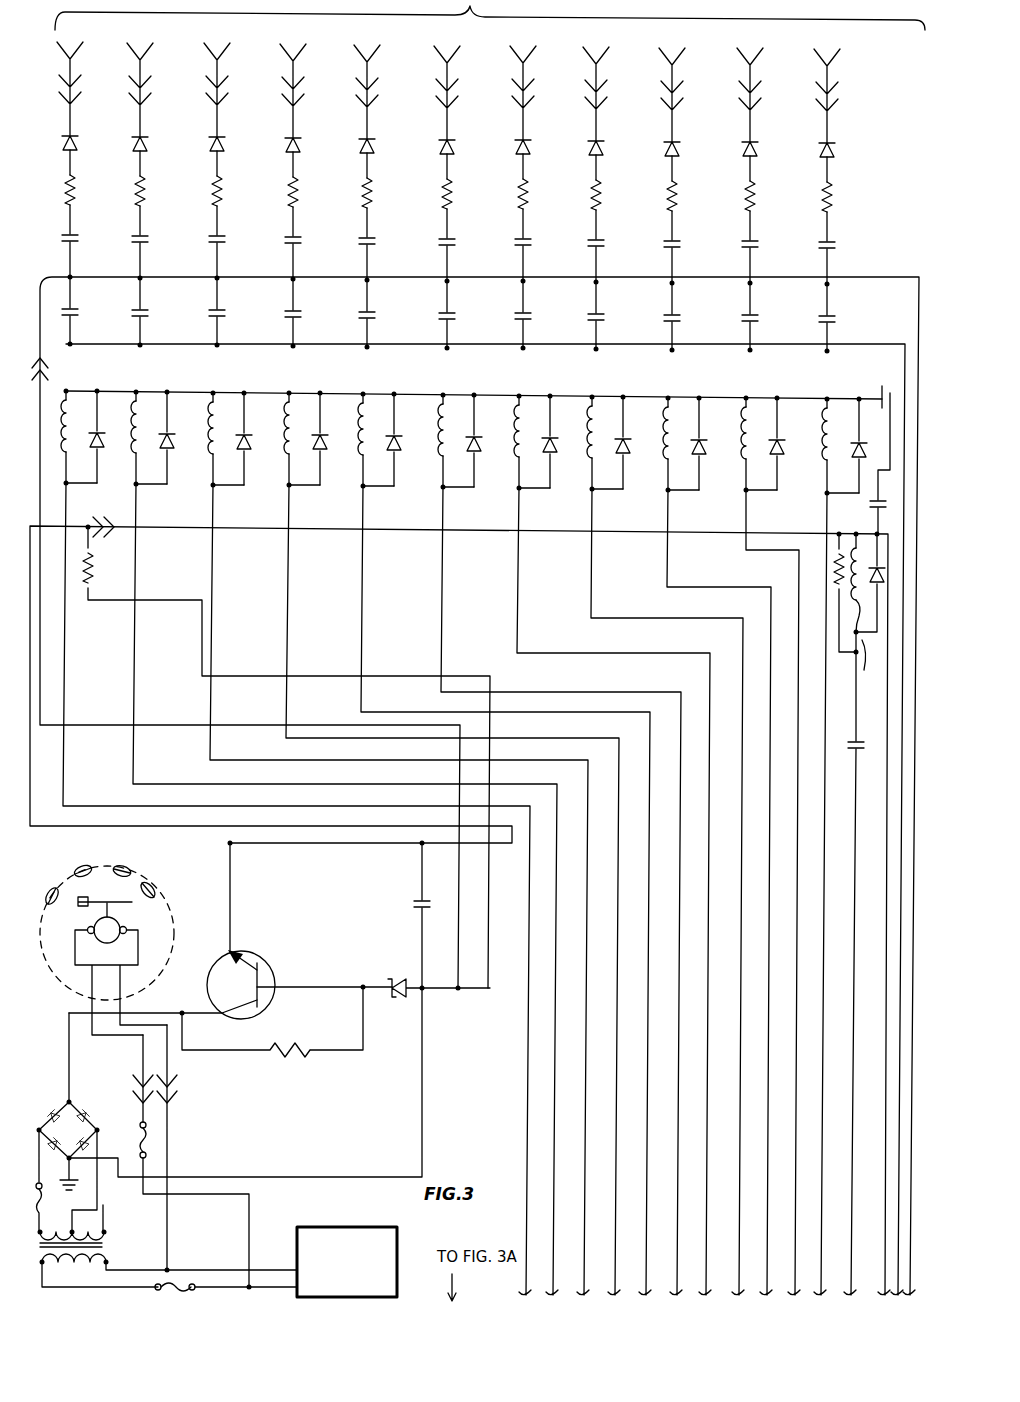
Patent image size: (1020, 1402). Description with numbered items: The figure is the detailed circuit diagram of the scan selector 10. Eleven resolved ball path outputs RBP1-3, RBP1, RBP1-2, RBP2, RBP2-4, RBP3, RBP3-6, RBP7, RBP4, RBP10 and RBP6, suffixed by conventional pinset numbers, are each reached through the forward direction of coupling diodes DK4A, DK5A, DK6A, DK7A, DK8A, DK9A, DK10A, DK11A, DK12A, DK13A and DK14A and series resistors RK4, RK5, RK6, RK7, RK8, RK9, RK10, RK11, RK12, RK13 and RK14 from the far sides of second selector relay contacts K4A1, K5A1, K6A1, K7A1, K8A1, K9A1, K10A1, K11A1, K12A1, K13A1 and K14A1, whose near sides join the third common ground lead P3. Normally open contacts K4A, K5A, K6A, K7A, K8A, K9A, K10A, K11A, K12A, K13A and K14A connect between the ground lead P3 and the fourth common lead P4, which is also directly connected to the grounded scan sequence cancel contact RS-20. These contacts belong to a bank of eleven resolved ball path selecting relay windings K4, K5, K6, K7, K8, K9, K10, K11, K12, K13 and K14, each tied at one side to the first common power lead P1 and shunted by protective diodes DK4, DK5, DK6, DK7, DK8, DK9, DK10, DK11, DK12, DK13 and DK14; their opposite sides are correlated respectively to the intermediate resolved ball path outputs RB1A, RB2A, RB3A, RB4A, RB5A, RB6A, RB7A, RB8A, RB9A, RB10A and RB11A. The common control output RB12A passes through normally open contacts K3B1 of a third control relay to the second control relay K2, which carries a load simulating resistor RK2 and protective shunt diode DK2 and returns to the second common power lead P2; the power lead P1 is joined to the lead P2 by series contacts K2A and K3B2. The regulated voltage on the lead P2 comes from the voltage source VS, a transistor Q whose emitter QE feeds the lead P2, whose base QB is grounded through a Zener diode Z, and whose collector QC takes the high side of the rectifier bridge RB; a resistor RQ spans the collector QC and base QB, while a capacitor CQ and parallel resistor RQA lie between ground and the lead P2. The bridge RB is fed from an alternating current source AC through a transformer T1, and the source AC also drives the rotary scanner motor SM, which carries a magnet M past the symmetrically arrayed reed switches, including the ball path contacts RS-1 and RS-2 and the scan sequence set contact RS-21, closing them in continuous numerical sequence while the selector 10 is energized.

The scan selector 10 is at (52, 166).
The resolved ball path output RBP1-3 is at (70, 76).
The resolved ball path output RBP1 is at (140, 77).
The resolved ball path output RBP1-2 is at (217, 77).
The resolved ball path output RBP2 is at (293, 78).
The resolved ball path output RBP2-4 is at (367, 79).
The resolved ball path output RBP3 is at (447, 80).
The resolved ball path output RBP3-6 is at (523, 80).
The resolved ball path output RBP7 is at (596, 81).
The resolved ball path output RBP4 is at (672, 82).
The resolved ball path output RBP10 is at (749, 82).
The resolved ball path output RBP6 is at (827, 83).
The coupling diode DK4A is at (89, 139).
The coupling diode DK5A is at (159, 140).
The coupling diode DK6A is at (236, 140).
The coupling diode DK7A is at (312, 141).
The coupling diode DK8A is at (386, 142).
The coupling diode DK9A is at (466, 143).
The coupling diode DK10A is at (542, 143).
The coupling diode DK11A is at (615, 144).
The coupling diode DK12A is at (691, 145).
The coupling diode DK13A is at (769, 145).
The coupling diode DK14A is at (846, 146).
The series resistor RK4 is at (89, 204).
The series resistor RK5 is at (159, 205).
The series resistor RK6 is at (236, 205).
The series resistor RK7 is at (312, 206).
The series resistor RK8 is at (386, 207).
The series resistor RK9 is at (466, 208).
The series resistor RK10 is at (547, 208).
The series resistor RK11 is at (620, 209).
The series resistor RK12 is at (696, 210).
The series resistor RK13 is at (774, 210).
The series resistor RK14 is at (851, 211).
The second selector relay contacts K4A1 is at (89, 232).
The second selector relay contacts K5A1 is at (159, 233).
The second selector relay contacts K6A1 is at (236, 233).
The second selector relay contacts K7A1 is at (312, 234).
The second selector relay contacts K8A1 is at (386, 235).
The second selector relay contacts K9A1 is at (466, 236).
The second selector relay contacts K10A1 is at (542, 236).
The second selector relay contacts K11A1 is at (615, 237).
The second selector relay contacts K12A1 is at (691, 238).
The second selector relay contacts K13A1 is at (769, 238).
The second selector relay contacts K14A1 is at (846, 239).
The selecting relay contacts K4A is at (89, 306).
The selecting relay contacts K5A is at (159, 307).
The selecting relay contacts K6A is at (236, 307).
The selecting relay contacts K7A is at (312, 308).
The selecting relay contacts K8A is at (386, 309).
The selecting relay contacts K9A is at (466, 310).
The selecting relay contacts K10A is at (542, 310).
The selecting relay contacts K11A is at (615, 311).
The selecting relay contacts K12A is at (691, 312).
The selecting relay contacts K13A is at (769, 312).
The selecting relay contacts K14A is at (846, 313).
The resolved ball path selecting relay winding K4 is at (79, 437).
The resolved ball path selecting relay winding K5 is at (149, 438).
The resolved ball path selecting relay winding K6 is at (226, 439).
The resolved ball path selecting relay winding K7 is at (302, 439).
The resolved ball path selecting relay winding K8 is at (376, 440).
The resolved ball path selecting relay winding K9 is at (456, 441).
The resolved ball path selecting relay winding K10 is at (532, 442).
The resolved ball path selecting relay winding K11 is at (605, 443).
The resolved ball path selecting relay winding K12 is at (681, 444).
The resolved ball path selecting relay winding K13 is at (759, 444).
The resolved ball path selecting relay winding K14 is at (840, 446).
The protective diode DK4 is at (112, 436).
The protective diode DK5 is at (182, 437).
The protective diode DK6 is at (259, 438).
The protective diode DK7 is at (335, 438).
The protective diode DK8 is at (409, 439).
The protective diode DK9 is at (489, 440).
The protective diode DK10 is at (571, 441).
The protective diode DK11 is at (644, 442).
The protective diode DK12 is at (720, 443).
The protective diode DK13 is at (798, 443).
The protective diode DK14 is at (870, 445).
The intermediate resolved ball path output RB1A is at (63, 664).
The intermediate resolved ball path output RB2A is at (133, 664).
The intermediate resolved ball path output RB3A is at (210, 656).
The intermediate resolved ball path output RB4A is at (286, 656).
The intermediate resolved ball path output RB5A is at (361, 656).
The intermediate resolved ball path output RB6A is at (441, 656).
The intermediate resolved ball path output RB7A is at (517, 656).
The intermediate resolved ball path output RB8A is at (658, 617).
The intermediate resolved ball path output RB9A is at (726, 584).
The intermediate resolved ball path output RB10A is at (742, 519).
The intermediate resolved ball path output RB11A is at (824, 519).
The common control output RB12A is at (856, 778).
The relay contacts K3B2 is at (886, 390).
The relay contacts K2A is at (876, 505).
The load simulating resistor RK2 is at (834, 575).
The second control relay K2 is at (865, 613).
The protective shunt diode DK2 is at (874, 536).
The relay contacts K3B1 is at (874, 762).
The first common power lead P1 is at (125, 391).
The second common power lead P2 is at (312, 527).
The third common ground lead P3 is at (44, 267).
The fourth common lead P4 is at (878, 350).
The parallel resistor RQA is at (286, 757).
The transistor Q is at (231, 995).
The emitter QE is at (236, 948).
The collector QC is at (202, 1008).
The base QB is at (328, 988).
The Zener diode Z is at (439, 976).
The capacitor CQ is at (416, 901).
The resistor RQ is at (294, 1052).
The voltage source VS is at (207, 926).
The rotary scanner motor SM is at (162, 1095).
The magnet M is at (90, 901).
The scan sequence set contact RS-21 is at (78, 864).
The reed switch contact RS-1 is at (122, 864).
The reed switch contact RS-2 is at (152, 883).
The scan sequence cancel contact RS-20 is at (42, 912).
The rectifier bridge RB is at (80, 1140).
The transformer T1 is at (106, 1246).
The alternating current source AC is at (360, 1268).